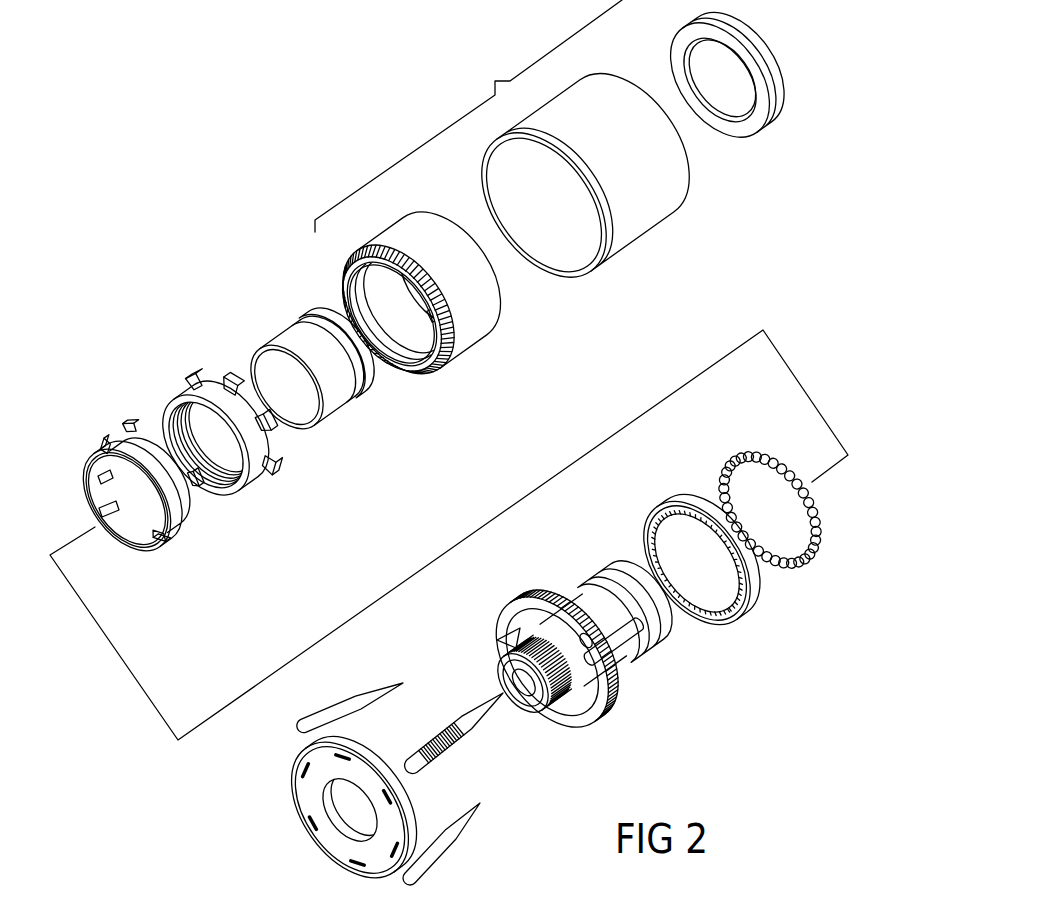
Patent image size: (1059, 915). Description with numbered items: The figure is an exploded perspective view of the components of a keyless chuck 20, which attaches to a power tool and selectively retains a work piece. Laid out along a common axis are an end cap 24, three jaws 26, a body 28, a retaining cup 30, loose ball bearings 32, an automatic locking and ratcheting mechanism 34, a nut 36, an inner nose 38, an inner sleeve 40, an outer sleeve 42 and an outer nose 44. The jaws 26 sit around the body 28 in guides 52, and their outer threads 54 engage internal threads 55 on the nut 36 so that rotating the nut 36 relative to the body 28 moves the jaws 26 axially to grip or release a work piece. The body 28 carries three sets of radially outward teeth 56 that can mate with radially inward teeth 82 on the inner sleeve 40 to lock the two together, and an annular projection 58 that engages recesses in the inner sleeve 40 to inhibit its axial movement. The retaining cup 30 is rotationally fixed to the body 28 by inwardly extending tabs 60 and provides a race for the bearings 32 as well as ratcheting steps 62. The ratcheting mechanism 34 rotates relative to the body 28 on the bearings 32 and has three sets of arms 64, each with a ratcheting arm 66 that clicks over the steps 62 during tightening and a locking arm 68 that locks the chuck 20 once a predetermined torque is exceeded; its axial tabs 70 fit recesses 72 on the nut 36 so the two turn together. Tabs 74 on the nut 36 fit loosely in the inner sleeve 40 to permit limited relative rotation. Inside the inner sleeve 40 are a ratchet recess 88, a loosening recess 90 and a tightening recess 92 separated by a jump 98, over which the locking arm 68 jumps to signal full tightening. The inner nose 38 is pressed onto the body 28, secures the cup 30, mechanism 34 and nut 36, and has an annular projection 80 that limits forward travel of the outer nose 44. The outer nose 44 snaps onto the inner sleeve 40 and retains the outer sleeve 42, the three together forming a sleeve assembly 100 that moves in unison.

The keyless chuck 20 is at (348, 68).
The sleeve assembly 100 is at (468, 116).
The end cap 24 is at (353, 861).
The jaws 26 is at (400, 759).
The body 28 is at (579, 650).
The retaining cup 30 is at (732, 588).
The loose ball bearings 32 is at (779, 444).
The automatic locking and ratcheting mechanism 34 is at (162, 485).
The nut 36 is at (244, 438).
The inner nose 38 is at (338, 396).
The inner sleeve 40 is at (428, 304).
The outer sleeve 42 is at (641, 276).
The outer nose 44 is at (775, 163).
The guides 52 is at (508, 638).
The outer threads 54 is at (448, 750).
The internal threads 55 is at (203, 446).
The teeth 56 is at (557, 658).
The annular projection 58 is at (552, 662).
The tabs 60 is at (758, 630).
The ratcheting steps 62 is at (697, 563).
The sets of arms 64 is at (132, 425).
The ratcheting arm 66 is at (109, 509).
The locking arm 68 is at (105, 477).
The tabs 70 is at (273, 462).
The recesses 72 is at (287, 387).
The tabs 74 is at (198, 379).
The annular projection 80 is at (344, 346).
The teeth 82 is at (331, 355).
The ratchet recess 88 is at (420, 284).
The loosening recess 90 is at (428, 288).
The tightening recess 92 is at (397, 310).
The jump 98 is at (387, 317).